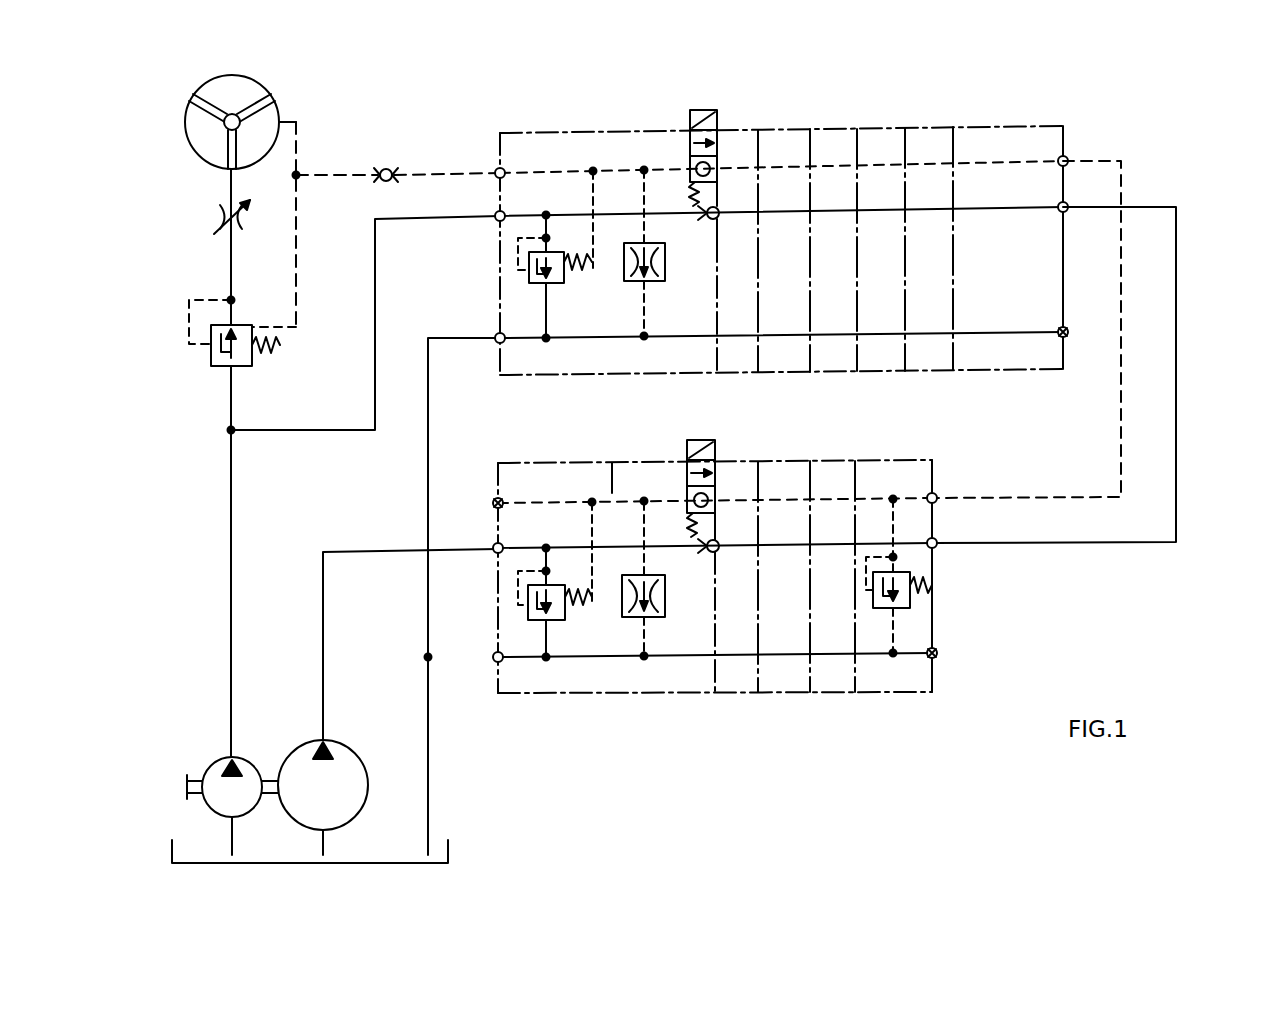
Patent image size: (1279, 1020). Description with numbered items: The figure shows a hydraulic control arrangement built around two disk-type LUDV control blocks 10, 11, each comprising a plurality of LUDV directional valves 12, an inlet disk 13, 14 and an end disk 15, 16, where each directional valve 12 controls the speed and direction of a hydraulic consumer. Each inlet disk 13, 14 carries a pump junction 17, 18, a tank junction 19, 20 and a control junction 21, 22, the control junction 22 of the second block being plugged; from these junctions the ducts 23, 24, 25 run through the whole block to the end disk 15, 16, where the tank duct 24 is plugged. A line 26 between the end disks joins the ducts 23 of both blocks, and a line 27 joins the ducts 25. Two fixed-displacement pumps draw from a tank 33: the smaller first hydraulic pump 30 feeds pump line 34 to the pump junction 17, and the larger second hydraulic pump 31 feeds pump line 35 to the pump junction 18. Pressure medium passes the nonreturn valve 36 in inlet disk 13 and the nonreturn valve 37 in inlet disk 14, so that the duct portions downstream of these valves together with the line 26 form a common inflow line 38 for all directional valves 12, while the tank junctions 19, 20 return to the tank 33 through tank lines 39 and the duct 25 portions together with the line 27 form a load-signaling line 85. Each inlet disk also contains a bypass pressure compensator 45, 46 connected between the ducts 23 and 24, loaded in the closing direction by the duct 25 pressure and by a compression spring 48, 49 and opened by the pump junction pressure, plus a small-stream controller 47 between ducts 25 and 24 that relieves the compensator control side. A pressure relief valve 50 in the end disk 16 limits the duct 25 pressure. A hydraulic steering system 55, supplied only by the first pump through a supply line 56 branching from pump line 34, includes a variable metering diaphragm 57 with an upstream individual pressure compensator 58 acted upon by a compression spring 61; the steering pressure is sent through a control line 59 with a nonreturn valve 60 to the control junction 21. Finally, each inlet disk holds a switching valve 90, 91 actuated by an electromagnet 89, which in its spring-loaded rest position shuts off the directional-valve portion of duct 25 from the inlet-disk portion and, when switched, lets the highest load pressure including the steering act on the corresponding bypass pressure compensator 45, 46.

The LUDV control block 10 is at (953, 118).
The LUDV control block 11 is at (845, 460).
The LUDV directional valve 12 is at (866, 148).
The inlet disk 13 is at (580, 152).
The inlet disk 14 is at (611, 459).
The end disk 15 is at (1044, 138).
The end disk 16 is at (906, 478).
The pump junction 17 is at (496, 222).
The pump junction 18 is at (494, 553).
The tank junction 19 is at (496, 345).
The tank junction 20 is at (495, 662).
The control junction 21 is at (496, 168).
The control junction 22 is at (494, 500).
The duct 23 is at (613, 216).
The tank duct 24 is at (580, 342).
The duct 25 is at (521, 170).
The line 26 is at (1180, 400).
The line 27 is at (1125, 350).
The first hydraulic pump 30 is at (218, 790).
The second hydraulic pump 31 is at (345, 781).
The tank 33 is at (450, 848).
The pump line 34 is at (226, 625).
The pump line 35 is at (326, 652).
The nonreturn valve 36 is at (719, 211).
The nonreturn valve 37 is at (718, 550).
The inflow line 38 is at (1182, 253).
The tank line 39 is at (426, 502).
The bypass pressure compensator 45 is at (527, 280).
The bypass pressure compensator 46 is at (526, 616).
The small-stream controller 47 is at (660, 266).
The compression spring 48 is at (576, 256).
The compression spring 49 is at (576, 590).
The pressure relief valve 50 is at (912, 598).
The hydraulic steering system 55 is at (215, 135).
The supply line 56 is at (222, 268).
The metering diaphragm 57 is at (212, 213).
The individual pressure compensator 58 is at (210, 352).
The control line 59 is at (345, 166).
The nonreturn valve 60 is at (392, 167).
The compression spring 61 is at (276, 352).
The load-signaling line 85 is at (1128, 166).
The electromagnet 89 is at (690, 118).
The switching valve 90 is at (714, 134).
The switching valve 91 is at (712, 470).